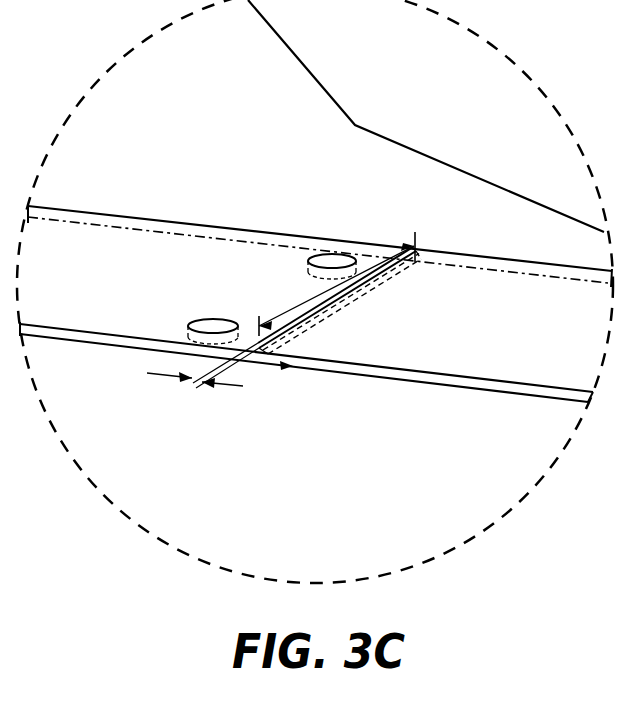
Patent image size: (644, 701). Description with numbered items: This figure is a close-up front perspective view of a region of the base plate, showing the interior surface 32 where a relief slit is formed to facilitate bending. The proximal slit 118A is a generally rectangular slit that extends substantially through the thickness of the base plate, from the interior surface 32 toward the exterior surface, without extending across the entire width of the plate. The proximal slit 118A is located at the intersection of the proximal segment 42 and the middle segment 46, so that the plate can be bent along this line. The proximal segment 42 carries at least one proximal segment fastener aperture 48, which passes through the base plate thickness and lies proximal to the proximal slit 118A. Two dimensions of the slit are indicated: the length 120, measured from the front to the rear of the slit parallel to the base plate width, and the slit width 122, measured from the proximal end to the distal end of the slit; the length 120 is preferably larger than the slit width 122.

The interior surface 32 is at (438, 293).
The proximal segment 42 is at (139, 245).
The middle segment 46 is at (452, 343).
The proximal segment fastener aperture 48 is at (218, 318).
The proximal slit 118A is at (337, 303).
The length of the slit 120 is at (368, 270).
The slit width 122 is at (163, 377).